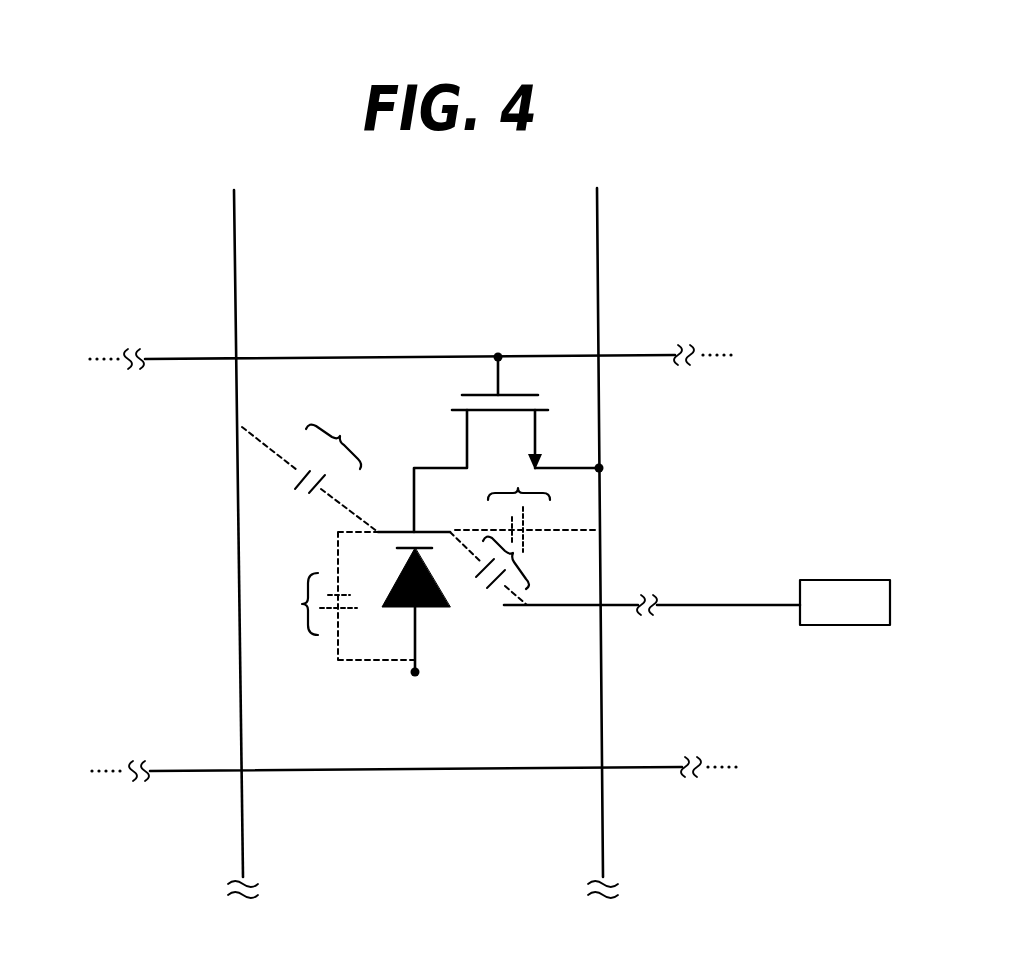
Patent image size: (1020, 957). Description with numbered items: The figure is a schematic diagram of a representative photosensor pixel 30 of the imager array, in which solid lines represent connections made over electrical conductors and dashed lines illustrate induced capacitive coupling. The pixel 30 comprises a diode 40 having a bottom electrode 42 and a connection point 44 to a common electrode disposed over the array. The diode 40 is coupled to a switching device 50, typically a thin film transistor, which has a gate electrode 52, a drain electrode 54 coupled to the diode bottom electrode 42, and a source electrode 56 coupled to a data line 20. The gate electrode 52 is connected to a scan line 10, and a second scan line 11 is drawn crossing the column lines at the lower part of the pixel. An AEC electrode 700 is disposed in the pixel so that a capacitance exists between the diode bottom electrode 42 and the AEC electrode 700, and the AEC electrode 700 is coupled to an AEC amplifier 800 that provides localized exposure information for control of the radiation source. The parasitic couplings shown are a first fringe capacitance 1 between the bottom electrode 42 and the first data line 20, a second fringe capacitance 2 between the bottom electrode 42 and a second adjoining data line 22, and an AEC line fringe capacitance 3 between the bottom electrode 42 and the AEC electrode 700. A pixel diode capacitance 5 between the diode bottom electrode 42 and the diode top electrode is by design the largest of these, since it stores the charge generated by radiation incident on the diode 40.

The scan line 10 is at (182, 358).
The row line 11 is at (188, 770).
The data line 20 is at (603, 837).
The second adjoining data line 22 is at (244, 843).
The photosensor pixel 30 is at (308, 734).
The diode 40 is at (455, 619).
The bottom electrode 42 is at (430, 530).
The connection point 44 is at (415, 678).
The switching device 50 is at (488, 443).
The gate electrode 52 is at (498, 386).
The drain electrode 54 is at (467, 447).
The source electrode 56 is at (535, 440).
The first fringe capacitance 1 is at (526, 500).
The second fringe capacitance 2 is at (310, 471).
The AEC line fringe capacitance 3 is at (514, 556).
The pixel diode capacitance 5 is at (336, 600).
The AEC electrode 700 is at (574, 609).
The AEC amplifier 800 is at (853, 626).